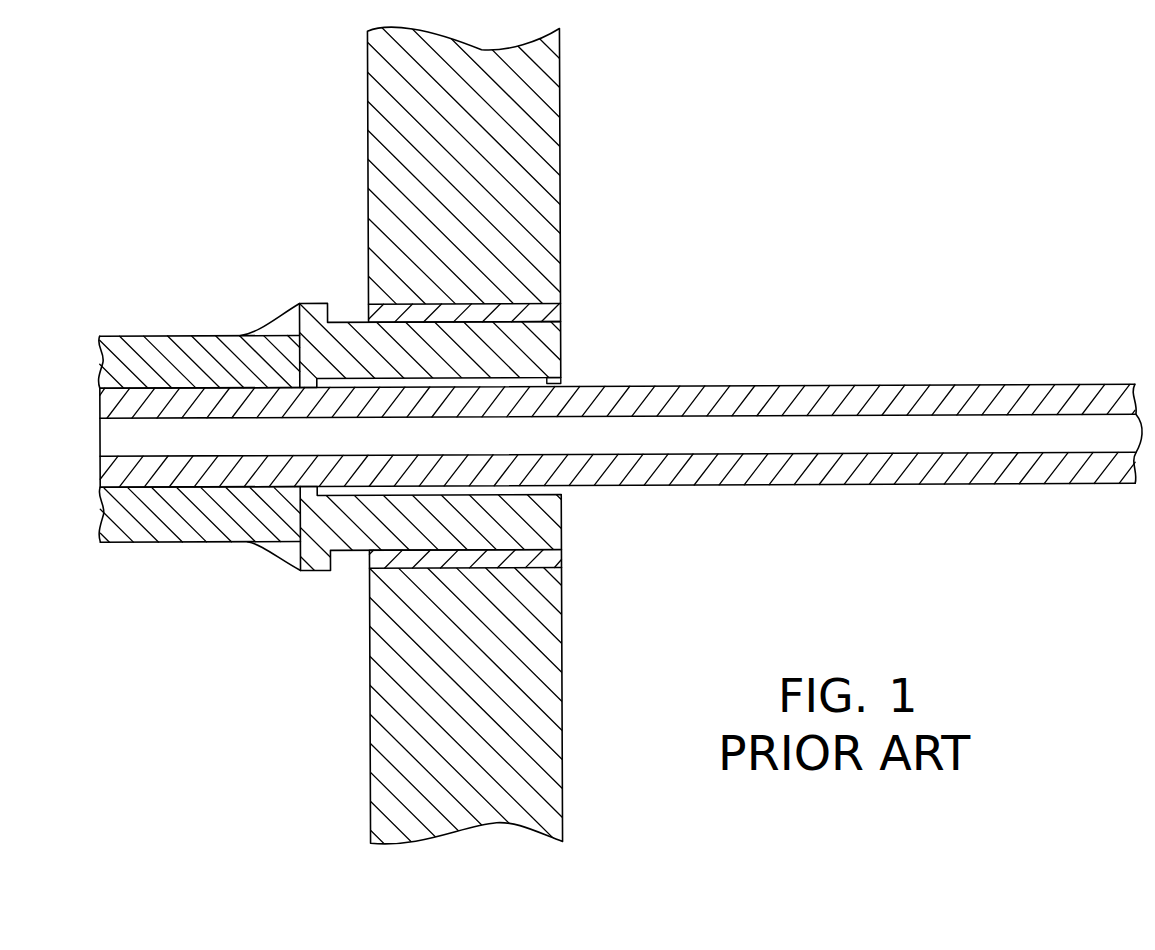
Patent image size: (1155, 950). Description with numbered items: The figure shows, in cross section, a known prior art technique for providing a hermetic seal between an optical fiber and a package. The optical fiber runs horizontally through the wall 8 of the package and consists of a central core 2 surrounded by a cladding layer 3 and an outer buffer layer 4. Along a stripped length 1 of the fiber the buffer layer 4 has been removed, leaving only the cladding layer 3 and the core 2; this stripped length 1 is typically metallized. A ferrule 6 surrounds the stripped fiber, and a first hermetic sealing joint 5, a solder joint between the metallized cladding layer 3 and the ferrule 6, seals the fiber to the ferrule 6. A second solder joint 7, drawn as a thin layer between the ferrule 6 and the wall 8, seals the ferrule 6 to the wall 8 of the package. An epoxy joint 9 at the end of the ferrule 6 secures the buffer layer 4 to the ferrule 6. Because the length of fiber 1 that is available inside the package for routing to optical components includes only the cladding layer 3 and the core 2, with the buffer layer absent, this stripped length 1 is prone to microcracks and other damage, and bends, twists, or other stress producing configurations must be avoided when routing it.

The stripped length of fiber 1 is at (907, 342).
The core 2 is at (788, 438).
The cladding layer 3 is at (788, 398).
The buffer layer 4 is at (213, 335).
The first hermetic sealing joint 5 is at (562, 384).
The ferrule 6 is at (540, 345).
The second solder joint 7 is at (377, 317).
The wall 8 is at (562, 125).
The weld fillet 9 is at (285, 325).